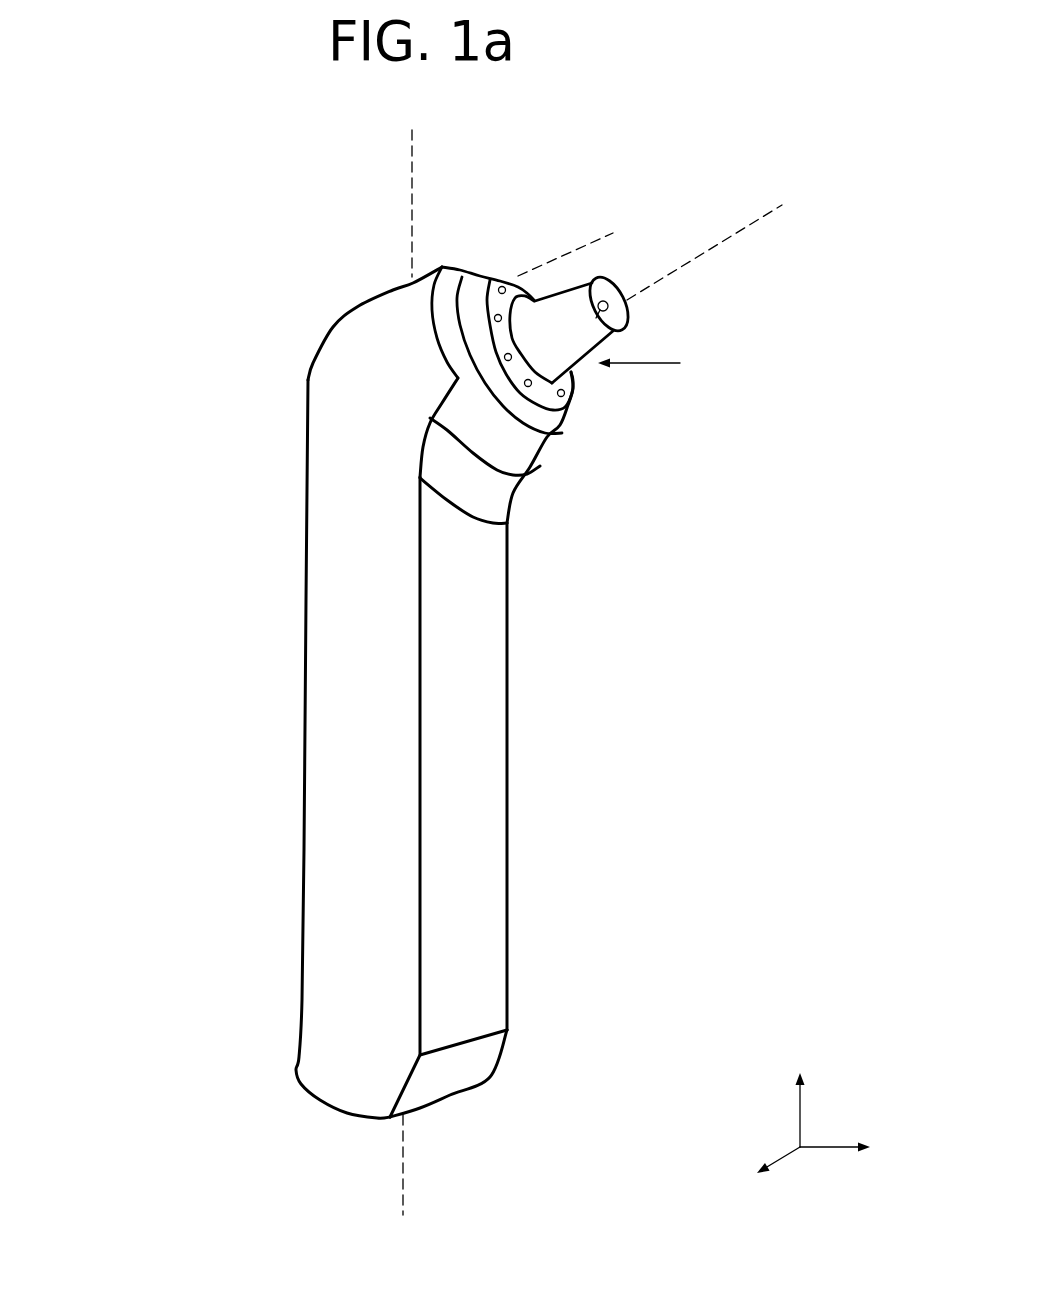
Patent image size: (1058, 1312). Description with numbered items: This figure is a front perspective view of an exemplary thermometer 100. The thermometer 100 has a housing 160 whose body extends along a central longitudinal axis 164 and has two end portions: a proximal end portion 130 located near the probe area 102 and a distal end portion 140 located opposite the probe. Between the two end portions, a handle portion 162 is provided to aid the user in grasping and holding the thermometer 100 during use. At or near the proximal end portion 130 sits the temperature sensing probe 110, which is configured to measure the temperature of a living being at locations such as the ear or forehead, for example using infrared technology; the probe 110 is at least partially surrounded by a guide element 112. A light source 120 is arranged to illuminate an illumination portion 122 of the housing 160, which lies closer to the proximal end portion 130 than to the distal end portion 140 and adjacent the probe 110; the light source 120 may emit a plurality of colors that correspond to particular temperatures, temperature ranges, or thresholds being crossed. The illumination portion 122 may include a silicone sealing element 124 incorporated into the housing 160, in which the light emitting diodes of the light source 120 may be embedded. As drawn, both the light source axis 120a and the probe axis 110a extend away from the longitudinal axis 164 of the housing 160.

The thermometer 100 is at (140, 287).
The probe area 102 is at (543, 183).
The temperature sensing probe 110 is at (608, 307).
The probe axis 110a is at (660, 275).
The guide element 112 is at (560, 302).
The light source 120 is at (502, 286).
The light source axis 120a is at (565, 240).
The illumination portion 122 is at (497, 302).
The sealing element 124 is at (567, 385).
The proximal end portion 130 is at (658, 360).
The distal end portion 140 is at (274, 1058).
The housing 160 is at (307, 672).
The handle portion 162 is at (508, 739).
The longitudinal axis 164 is at (410, 243).